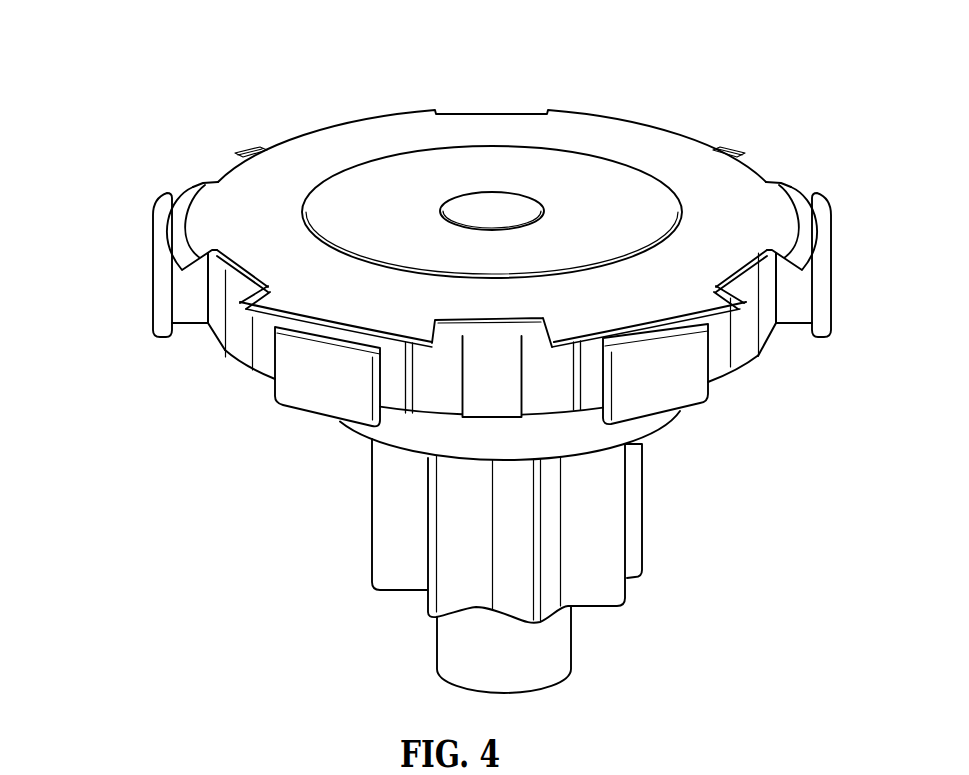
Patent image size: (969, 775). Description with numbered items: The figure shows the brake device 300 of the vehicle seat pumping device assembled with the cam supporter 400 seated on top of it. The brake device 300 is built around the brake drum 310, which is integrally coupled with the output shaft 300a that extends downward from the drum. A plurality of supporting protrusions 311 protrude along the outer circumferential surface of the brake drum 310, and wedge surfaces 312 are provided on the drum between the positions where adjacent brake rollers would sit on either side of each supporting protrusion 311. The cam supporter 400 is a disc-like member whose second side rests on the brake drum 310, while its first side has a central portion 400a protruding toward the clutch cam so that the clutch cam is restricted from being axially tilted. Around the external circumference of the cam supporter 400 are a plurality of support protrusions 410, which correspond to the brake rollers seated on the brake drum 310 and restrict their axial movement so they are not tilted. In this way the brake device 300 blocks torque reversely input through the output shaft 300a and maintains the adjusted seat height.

The brake device 300 is at (434, 523).
The output shaft 300a is at (453, 657).
The brake drum 310 is at (243, 352).
The supporting protrusion 311 is at (313, 386).
The wedge surface 312 is at (533, 380).
The cam supporter 400 is at (503, 246).
The central portion 400a is at (408, 172).
The support protrusion 410 is at (710, 307).